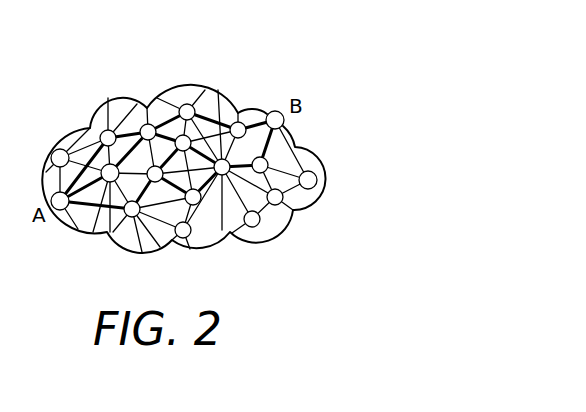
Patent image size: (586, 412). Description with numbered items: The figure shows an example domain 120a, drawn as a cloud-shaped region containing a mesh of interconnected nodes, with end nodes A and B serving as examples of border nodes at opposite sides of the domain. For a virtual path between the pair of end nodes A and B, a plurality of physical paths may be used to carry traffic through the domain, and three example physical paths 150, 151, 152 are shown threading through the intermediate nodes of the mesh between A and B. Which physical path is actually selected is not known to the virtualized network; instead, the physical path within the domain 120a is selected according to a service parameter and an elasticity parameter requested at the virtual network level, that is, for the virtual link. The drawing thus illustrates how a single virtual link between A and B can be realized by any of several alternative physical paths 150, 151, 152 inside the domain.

The domain 120a is at (103, 88).
The physical path 150 is at (204, 97).
The physical path 151 is at (199, 237).
The physical path 152 is at (238, 233).